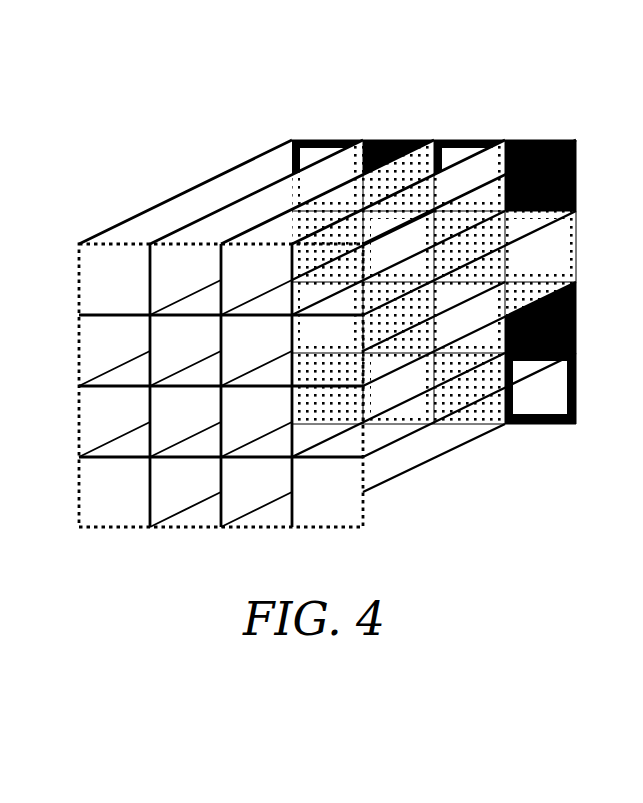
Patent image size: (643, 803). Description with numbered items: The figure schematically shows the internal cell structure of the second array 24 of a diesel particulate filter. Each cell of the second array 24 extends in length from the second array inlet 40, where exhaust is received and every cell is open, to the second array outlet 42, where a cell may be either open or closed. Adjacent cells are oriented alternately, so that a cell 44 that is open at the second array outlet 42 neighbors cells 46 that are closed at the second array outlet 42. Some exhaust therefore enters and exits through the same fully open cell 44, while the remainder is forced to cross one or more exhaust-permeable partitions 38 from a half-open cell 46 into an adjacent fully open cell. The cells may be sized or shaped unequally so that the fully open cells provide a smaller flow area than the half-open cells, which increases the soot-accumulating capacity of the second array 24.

The second array 24 is at (360, 329).
The exhaust-permeable partitions 38 is at (534, 228).
The second array inlet 40 is at (363, 509).
The second array outlet 42 is at (576, 402).
The cell open at the second array outlet 44 is at (368, 194).
The cell closed at the second array outlet 46 is at (278, 199).